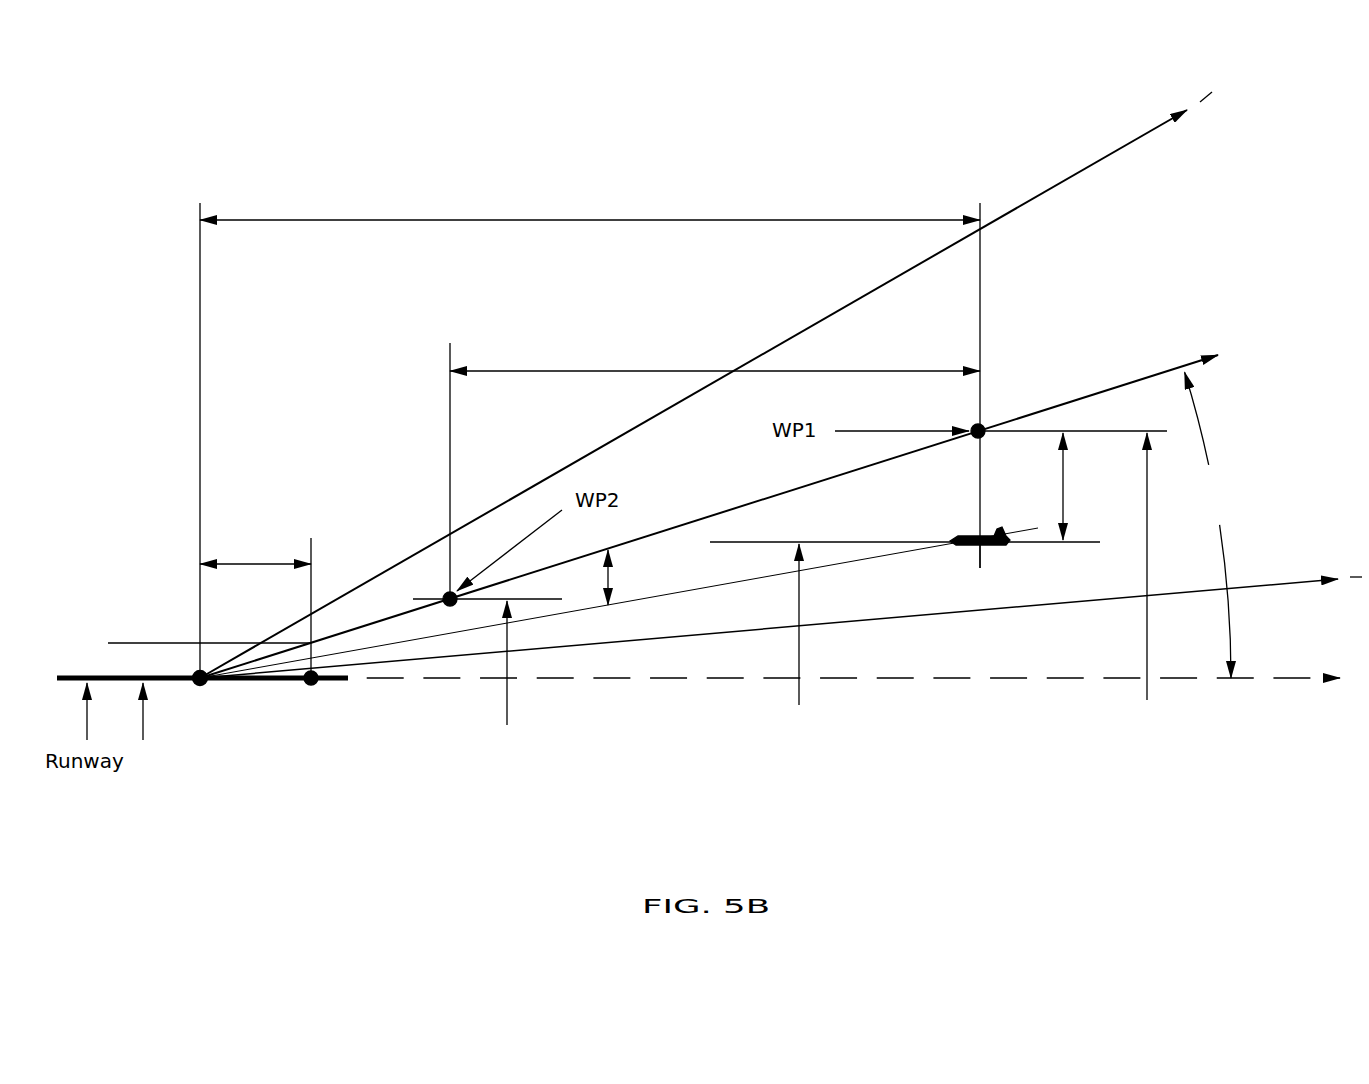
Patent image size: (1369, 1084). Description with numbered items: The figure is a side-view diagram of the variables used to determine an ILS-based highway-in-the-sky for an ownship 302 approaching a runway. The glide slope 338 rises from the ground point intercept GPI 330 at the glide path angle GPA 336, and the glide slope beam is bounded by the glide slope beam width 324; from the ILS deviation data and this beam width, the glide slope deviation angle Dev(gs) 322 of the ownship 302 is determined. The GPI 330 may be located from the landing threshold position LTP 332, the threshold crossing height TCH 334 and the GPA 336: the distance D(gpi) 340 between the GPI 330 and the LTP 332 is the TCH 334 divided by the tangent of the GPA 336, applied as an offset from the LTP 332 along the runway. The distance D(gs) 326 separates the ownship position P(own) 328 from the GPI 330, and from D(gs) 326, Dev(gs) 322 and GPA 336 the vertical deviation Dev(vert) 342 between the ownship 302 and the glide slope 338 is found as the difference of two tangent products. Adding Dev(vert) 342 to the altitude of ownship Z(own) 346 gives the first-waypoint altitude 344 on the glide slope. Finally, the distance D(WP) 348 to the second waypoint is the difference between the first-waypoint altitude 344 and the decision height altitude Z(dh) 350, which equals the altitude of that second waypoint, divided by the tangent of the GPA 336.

The ownship 302 is at (1005, 560).
The glide slope deviation angle Dev(gs) 322 is at (653, 573).
The glide slope beam width BW(loc) 324 is at (1340, 575).
The distance D(gs) 326 is at (590, 205).
The ownship position P(own) 328 is at (962, 560).
The ground point intercept GPI 330 is at (199, 687).
The landing threshold position LTP 332 is at (311, 687).
The threshold crossing height TCH 334 is at (143, 641).
The glide path angle GPA 336 is at (1210, 525).
The glide slope GS 338 is at (1130, 382).
The distance D(gpi) 340 is at (255, 588).
The vertical deviation Dev(vert) 342 is at (1062, 486).
The altitude Z(WP1) 344 is at (1142, 624).
The altitude of ownship Z(own) 346 is at (905, 656).
The distance D(WP) 348 is at (715, 358).
The altitude Z(dh) of the decision height 350 is at (506, 708).